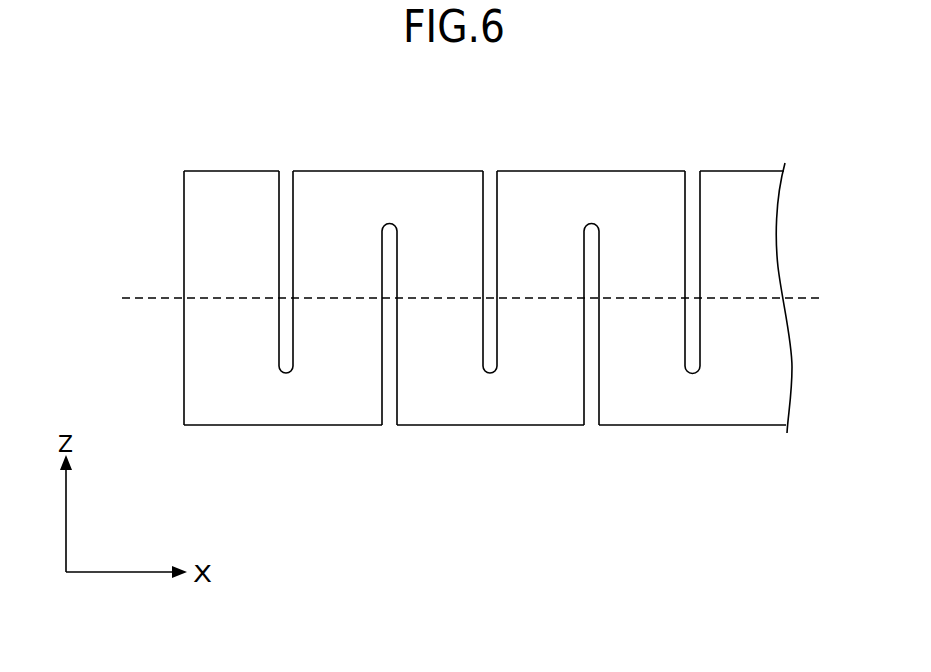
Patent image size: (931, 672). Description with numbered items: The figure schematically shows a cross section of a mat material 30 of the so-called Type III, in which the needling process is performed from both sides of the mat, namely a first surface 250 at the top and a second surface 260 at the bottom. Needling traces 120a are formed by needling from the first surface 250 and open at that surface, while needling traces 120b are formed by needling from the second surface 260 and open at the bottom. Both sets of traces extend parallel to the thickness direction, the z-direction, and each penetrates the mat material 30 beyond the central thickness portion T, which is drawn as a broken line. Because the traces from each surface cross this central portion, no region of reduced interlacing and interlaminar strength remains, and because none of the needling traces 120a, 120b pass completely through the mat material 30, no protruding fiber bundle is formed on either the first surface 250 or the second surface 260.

The mat material 30 is at (656, 73).
The first surface 250 is at (230, 171).
The second surface 260 is at (233, 425).
The needling traces 120a is at (288, 171).
The needling traces 120b is at (388, 425).
The central thickness portion T is at (152, 298).